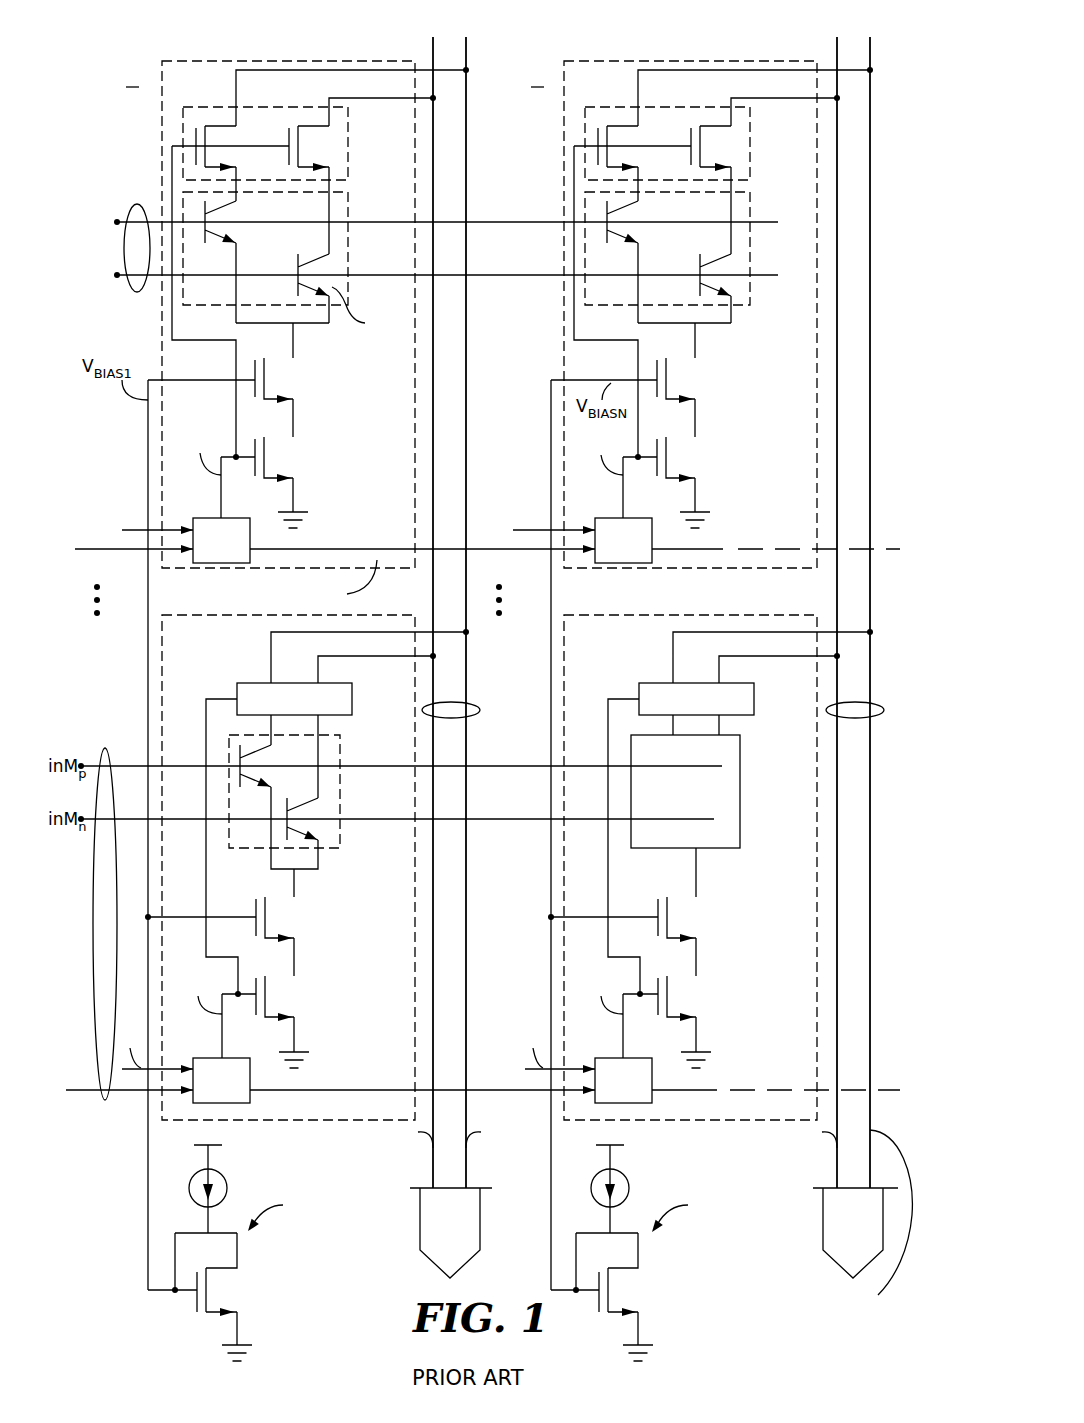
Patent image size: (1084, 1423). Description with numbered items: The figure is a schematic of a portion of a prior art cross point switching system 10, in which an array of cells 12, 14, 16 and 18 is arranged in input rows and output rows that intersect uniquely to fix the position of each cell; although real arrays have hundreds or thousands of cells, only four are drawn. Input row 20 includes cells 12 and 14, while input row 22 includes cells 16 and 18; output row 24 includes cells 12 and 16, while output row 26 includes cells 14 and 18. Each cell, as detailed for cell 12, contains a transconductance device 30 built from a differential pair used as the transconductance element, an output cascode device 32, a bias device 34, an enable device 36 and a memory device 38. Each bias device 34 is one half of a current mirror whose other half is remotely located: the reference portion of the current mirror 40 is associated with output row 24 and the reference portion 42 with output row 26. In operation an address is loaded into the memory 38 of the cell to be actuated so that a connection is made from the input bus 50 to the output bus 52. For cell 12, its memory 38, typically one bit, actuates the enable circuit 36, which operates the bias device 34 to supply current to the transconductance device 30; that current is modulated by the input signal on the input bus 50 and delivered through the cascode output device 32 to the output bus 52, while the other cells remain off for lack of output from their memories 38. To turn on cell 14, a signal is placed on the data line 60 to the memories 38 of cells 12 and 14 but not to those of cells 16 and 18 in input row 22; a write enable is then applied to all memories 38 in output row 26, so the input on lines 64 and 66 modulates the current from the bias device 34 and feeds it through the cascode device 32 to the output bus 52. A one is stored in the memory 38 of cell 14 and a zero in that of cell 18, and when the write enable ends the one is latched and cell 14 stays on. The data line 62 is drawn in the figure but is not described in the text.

The cross point switching system 10 is at (104, 57).
The cell 12 is at (345, 351).
The cell 14 is at (740, 351).
The cell 16 is at (379, 885).
The cell 18 is at (779, 885).
The input row 20 is at (128, 317).
The input row 22 is at (130, 867).
The output row 24 is at (285, 46).
The output row 26 is at (697, 46).
The transconductance device 30 is at (348, 243).
The output cascode device 32 is at (348, 140).
The bias device 34 is at (272, 383).
The enable device 36 is at (272, 462).
The memory device 38 is at (231, 561).
The current mirror 40 is at (168, 1207).
The reference portion 42 is at (571, 1223).
The input bus 50 is at (137, 204).
The output bus 52 is at (480, 712).
The data line 60 is at (103, 548).
The data line 62 is at (142, 530).
The input line 64 is at (497, 222).
The input line 66 is at (497, 275).